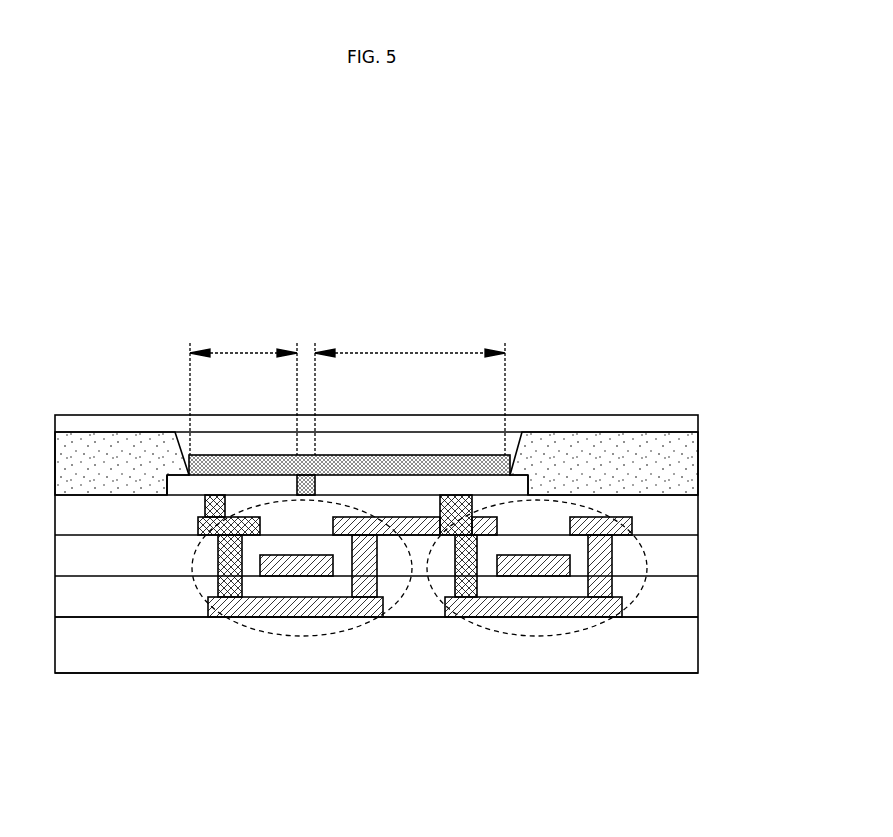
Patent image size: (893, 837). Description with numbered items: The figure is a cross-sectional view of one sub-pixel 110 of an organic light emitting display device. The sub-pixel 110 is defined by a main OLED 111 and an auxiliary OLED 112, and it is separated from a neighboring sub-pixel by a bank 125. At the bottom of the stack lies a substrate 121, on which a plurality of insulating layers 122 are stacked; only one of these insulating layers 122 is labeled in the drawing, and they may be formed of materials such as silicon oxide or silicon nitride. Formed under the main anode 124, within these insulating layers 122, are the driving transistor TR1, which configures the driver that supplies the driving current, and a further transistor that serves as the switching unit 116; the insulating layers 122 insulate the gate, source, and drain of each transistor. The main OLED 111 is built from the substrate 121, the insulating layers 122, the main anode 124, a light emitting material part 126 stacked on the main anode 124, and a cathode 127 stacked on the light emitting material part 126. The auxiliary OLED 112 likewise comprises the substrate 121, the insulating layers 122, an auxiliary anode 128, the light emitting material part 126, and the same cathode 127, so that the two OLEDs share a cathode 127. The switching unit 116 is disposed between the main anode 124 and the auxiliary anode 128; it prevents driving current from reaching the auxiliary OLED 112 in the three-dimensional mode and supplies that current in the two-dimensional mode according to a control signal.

The sub-pixel 110 is at (195, 263).
The main OLED 111 is at (410, 390).
The auxiliary OLED 112 is at (243, 390).
The switching unit 116 is at (307, 636).
The substrate 121 is at (677, 645).
The insulating layer 122 is at (677, 513).
The main anode 124 is at (530, 487).
The bank 125 is at (673, 462).
The light emitting material part 126 is at (467, 460).
The cathode 127 is at (123, 428).
The auxiliary anode 128 is at (170, 477).
The driving transistor TR1 is at (540, 636).